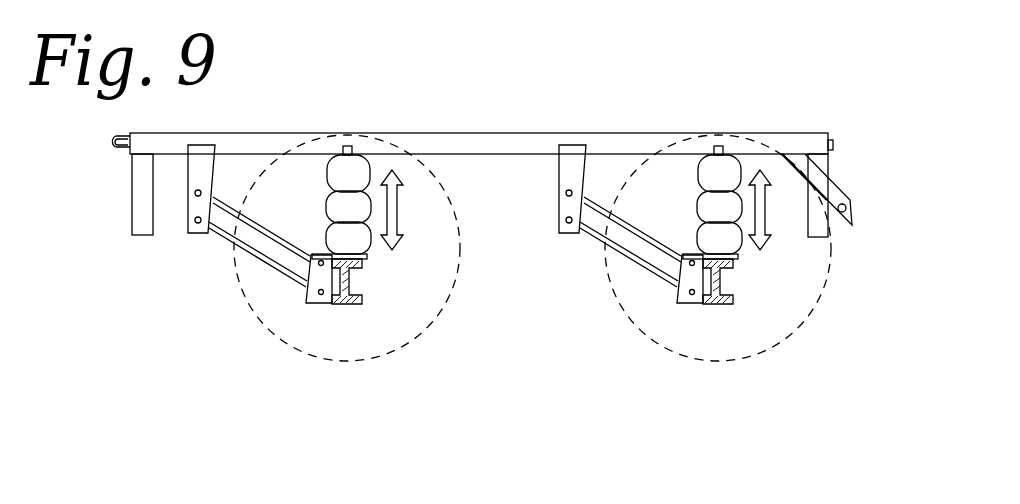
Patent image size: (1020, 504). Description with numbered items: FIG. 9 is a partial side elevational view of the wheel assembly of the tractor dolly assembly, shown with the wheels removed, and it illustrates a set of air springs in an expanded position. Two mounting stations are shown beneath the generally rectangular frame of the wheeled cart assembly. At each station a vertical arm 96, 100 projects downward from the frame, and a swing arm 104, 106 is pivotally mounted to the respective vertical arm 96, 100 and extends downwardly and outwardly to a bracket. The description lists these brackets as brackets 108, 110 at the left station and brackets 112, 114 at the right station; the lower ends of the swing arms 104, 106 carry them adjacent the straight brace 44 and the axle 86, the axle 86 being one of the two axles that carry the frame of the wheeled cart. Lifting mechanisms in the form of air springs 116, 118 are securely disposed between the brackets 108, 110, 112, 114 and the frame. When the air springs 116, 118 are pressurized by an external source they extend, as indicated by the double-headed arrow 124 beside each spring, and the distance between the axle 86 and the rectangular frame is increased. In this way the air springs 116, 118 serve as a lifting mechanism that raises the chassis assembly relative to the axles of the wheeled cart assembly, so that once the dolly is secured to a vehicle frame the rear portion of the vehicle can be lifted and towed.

The vertical arm 96 is at (205, 167).
The vertical arm 100 is at (577, 167).
The swing arm 104 is at (250, 237).
The swing arm 106 is at (657, 253).
The bracket 108 is at (308, 302).
The bracket 110 is at (387, 330).
The bracket 112 is at (692, 293).
The bracket 114 is at (772, 333).
The air spring 116 is at (347, 208).
The air spring 118 is at (718, 208).
The arrow 124 is at (397, 202).
The straight brace 44 is at (354, 283).
The axle 86 is at (722, 283).